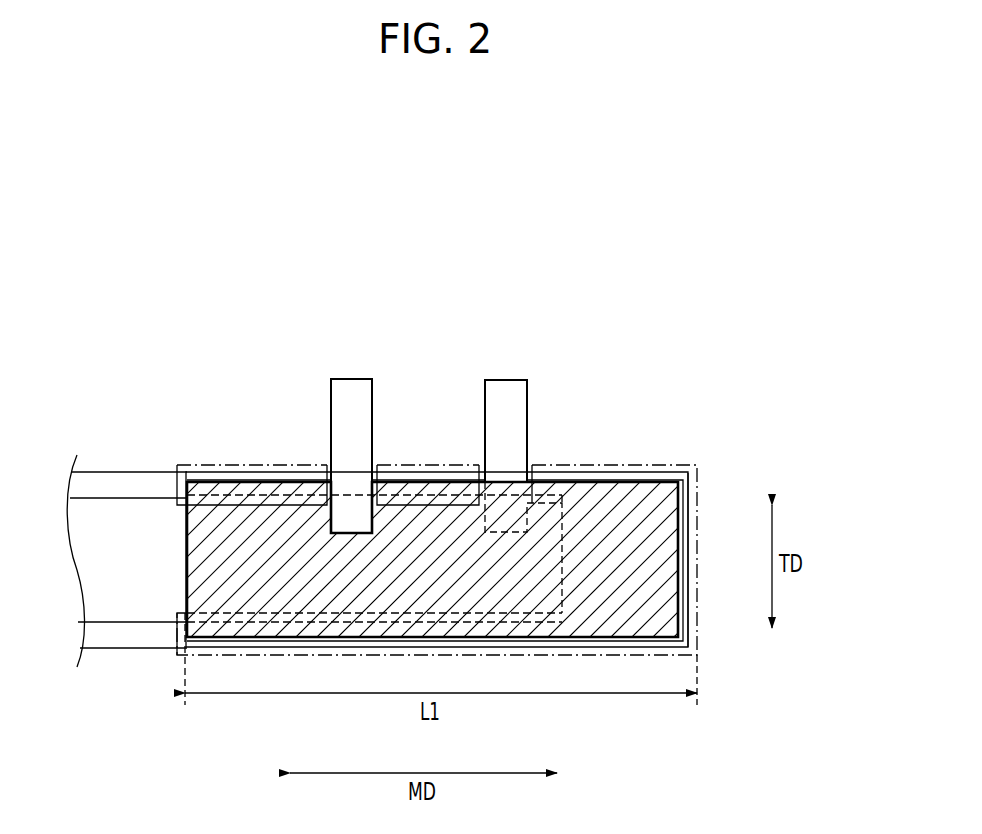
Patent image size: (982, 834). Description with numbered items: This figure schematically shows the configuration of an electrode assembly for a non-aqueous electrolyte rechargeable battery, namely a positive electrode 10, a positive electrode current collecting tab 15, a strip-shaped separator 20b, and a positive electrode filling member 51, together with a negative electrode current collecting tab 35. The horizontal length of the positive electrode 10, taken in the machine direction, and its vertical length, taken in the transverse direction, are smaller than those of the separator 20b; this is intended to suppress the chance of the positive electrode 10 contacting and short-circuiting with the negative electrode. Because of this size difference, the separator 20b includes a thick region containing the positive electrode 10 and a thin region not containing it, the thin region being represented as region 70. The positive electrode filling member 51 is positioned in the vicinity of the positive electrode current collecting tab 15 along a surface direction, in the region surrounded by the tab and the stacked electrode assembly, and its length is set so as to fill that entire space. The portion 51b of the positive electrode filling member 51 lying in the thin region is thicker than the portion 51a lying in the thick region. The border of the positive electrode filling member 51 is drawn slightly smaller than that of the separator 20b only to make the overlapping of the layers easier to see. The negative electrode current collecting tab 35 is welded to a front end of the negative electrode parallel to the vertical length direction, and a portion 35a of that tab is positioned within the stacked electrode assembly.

The positive electrode 10 is at (128, 623).
The positive electrode current collecting tab 15 is at (331, 403).
The negative electrode current collecting tab 35 is at (527, 403).
The portion of the negative electrode current collecting tab 35a is at (527, 521).
The positive electrode filling member 51 is at (452, 582).
The portion of the positive electrode filling member in the thick region 51a is at (505, 585).
The portion of the positive electrode filling member in the thin region 51b is at (229, 487).
The thin region 70 is at (198, 464).
The separator 20b is at (688, 597).